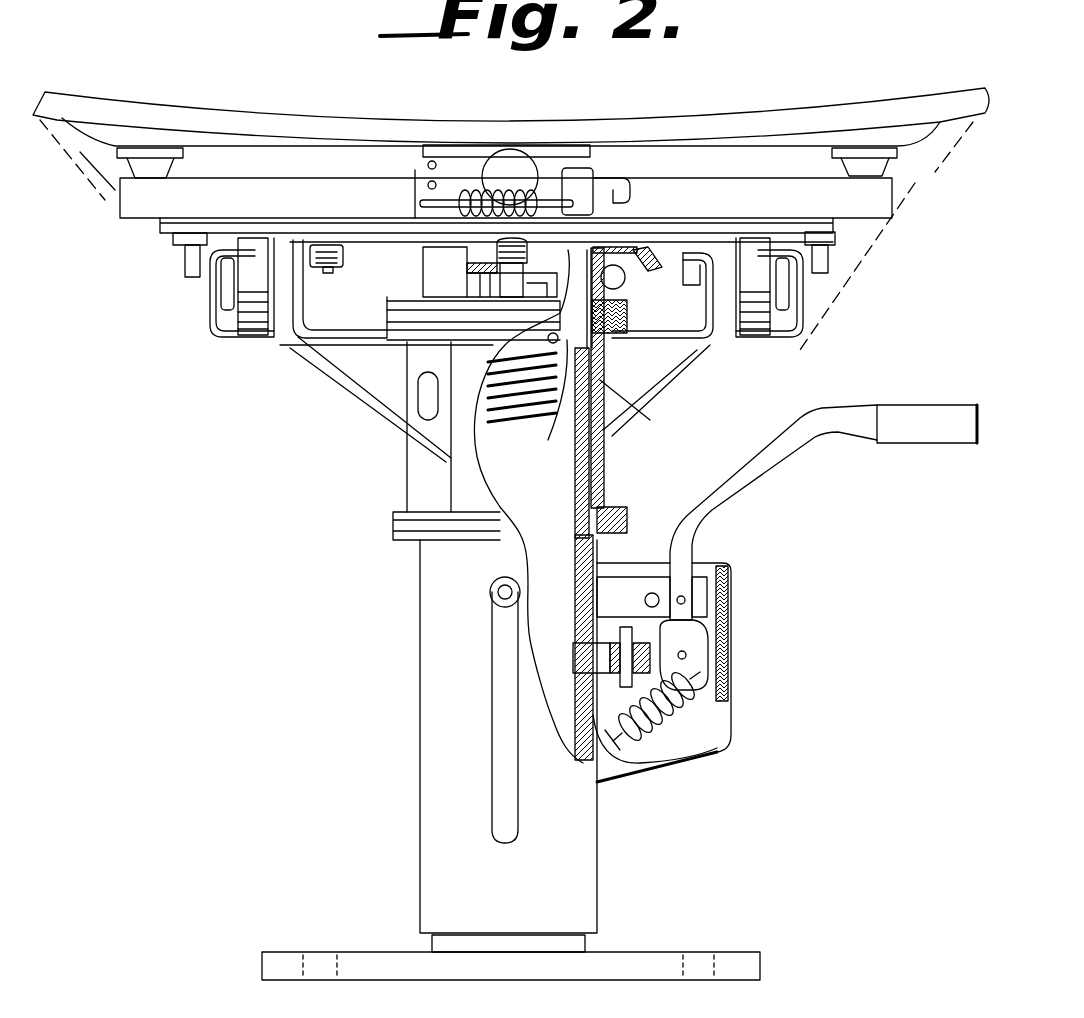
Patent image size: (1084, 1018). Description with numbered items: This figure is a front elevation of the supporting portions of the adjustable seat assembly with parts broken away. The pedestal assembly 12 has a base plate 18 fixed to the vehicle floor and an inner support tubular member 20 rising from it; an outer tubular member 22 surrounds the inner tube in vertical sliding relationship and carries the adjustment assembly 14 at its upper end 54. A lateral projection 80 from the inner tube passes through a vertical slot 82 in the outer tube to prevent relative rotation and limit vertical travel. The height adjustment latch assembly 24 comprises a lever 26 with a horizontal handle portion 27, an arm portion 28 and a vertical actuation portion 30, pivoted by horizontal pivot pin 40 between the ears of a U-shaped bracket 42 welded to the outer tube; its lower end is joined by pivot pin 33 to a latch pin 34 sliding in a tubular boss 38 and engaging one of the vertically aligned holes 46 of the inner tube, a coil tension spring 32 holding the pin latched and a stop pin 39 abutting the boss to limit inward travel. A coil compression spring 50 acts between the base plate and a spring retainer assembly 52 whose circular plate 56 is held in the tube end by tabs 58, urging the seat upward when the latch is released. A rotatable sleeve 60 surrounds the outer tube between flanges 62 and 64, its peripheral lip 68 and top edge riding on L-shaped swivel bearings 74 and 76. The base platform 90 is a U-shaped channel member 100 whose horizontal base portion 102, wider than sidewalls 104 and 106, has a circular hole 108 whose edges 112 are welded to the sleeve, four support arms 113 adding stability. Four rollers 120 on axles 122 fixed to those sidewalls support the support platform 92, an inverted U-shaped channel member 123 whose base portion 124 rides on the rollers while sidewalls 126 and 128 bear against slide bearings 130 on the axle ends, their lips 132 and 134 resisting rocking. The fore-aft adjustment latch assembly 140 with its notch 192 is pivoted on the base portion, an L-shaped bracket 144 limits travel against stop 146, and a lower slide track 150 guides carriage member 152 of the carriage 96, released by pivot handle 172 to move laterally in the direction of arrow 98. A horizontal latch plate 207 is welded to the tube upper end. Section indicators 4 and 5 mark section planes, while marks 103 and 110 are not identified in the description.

The section line 4- 4 is at (63, 177).
The section line 5- 5 is at (183, 287).
The pedestal assembly 12 is at (410, 715).
The adjustment assembly 14 is at (748, 366).
The base plate 18 is at (662, 952).
The inner support tubular member 20 is at (453, 946).
The outer tubular member 22 is at (418, 670).
The height adjustment latch assembly 24 is at (770, 684).
The lever 26 is at (776, 458).
The horizontal handle portion 27 is at (930, 393).
The arm portion 28 is at (830, 440).
The vertical actuation portion 30 is at (697, 636).
The coil tension spring 32 is at (665, 662).
The horizontal pivot pin 33 is at (690, 653).
The latch pin 34 is at (731, 682).
The tubular boss 38 is at (576, 754).
The stop pin 39 is at (580, 643).
The horizontal pivot pin 40 is at (688, 600).
The U-shaped bracket 42 is at (637, 592).
The vertically aligned holes 46 is at (575, 533).
The coil compression spring 50 is at (490, 432).
The spring retainer assembly 52 is at (548, 442).
The upper end of outer tube 54 is at (593, 260).
The circular plate 56 is at (500, 343).
The tabs 58 is at (470, 288).
The rotatable sleeve 60 is at (472, 502).
The flange 62 is at (578, 570).
The flange 64 is at (627, 308).
The peripheral lip 68 is at (617, 512).
The L-shaped swivel bearing 74 is at (627, 520).
The L-shaped swivel bearing 76 is at (629, 326).
The lateral projection 80 is at (490, 594).
The vertical slot 82 is at (497, 789).
The base platform 90 is at (353, 368).
The support platform 92 is at (810, 283).
The carriage 96 is at (160, 267).
The arrow 98 is at (890, 252).
The U-shaped channel member 100 is at (290, 345).
The horizontal base portion 102 is at (367, 352).
The tension rod 103 is at (662, 367).
The sidewall 104 is at (322, 352).
The sidewall 106 is at (700, 310).
The circular hole 108 is at (608, 348).
The adjustment rod 110 is at (425, 258).
The edges of hole 112 is at (645, 407).
The support arms 113 is at (378, 403).
The rollers 120 is at (218, 344).
The axles 122 is at (290, 270).
The inverted U-shaped channel member 123 is at (250, 237).
The base portion 124 is at (287, 245).
The sidewall 126 is at (187, 290).
The sidewall 128 is at (800, 290).
The slide bearings 130 is at (222, 283).
The lip 132 is at (262, 340).
The lip 134 is at (772, 348).
The fore-aft adjustment latch assembly 140 is at (625, 280).
The L-shaped bracket 144 is at (287, 288).
The stop 146 is at (352, 276).
The lower slide track 150 is at (885, 207).
The carriage member 152 is at (512, 281).
The pivot handle 172 is at (530, 189).
The notch 192 is at (668, 252).
The horizontal latch plate 207 is at (420, 323).